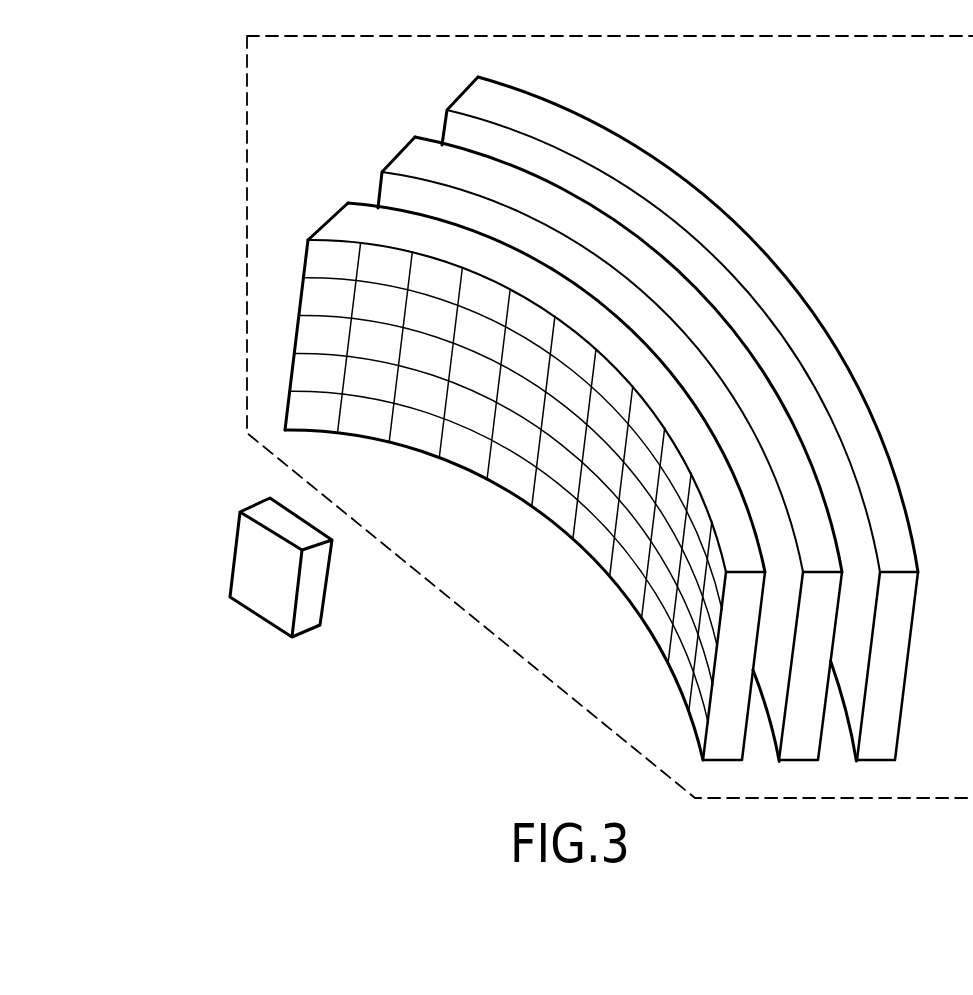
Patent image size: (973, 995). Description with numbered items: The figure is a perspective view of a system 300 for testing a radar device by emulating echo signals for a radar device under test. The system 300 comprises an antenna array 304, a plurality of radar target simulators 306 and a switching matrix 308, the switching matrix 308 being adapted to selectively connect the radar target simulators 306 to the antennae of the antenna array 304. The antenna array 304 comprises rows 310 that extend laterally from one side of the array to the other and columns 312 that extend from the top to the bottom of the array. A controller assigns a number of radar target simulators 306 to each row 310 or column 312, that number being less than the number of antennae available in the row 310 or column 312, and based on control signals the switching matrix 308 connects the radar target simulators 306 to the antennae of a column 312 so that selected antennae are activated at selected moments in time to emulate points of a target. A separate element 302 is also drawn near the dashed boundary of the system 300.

The system 300 is at (247, 54).
The radiation source 302 is at (236, 552).
The antenna array 304 is at (327, 222).
The radar target simulators 306 is at (465, 88).
The switching matrix 308 is at (398, 155).
The rows 310 is at (305, 272).
The columns 312 is at (313, 433).